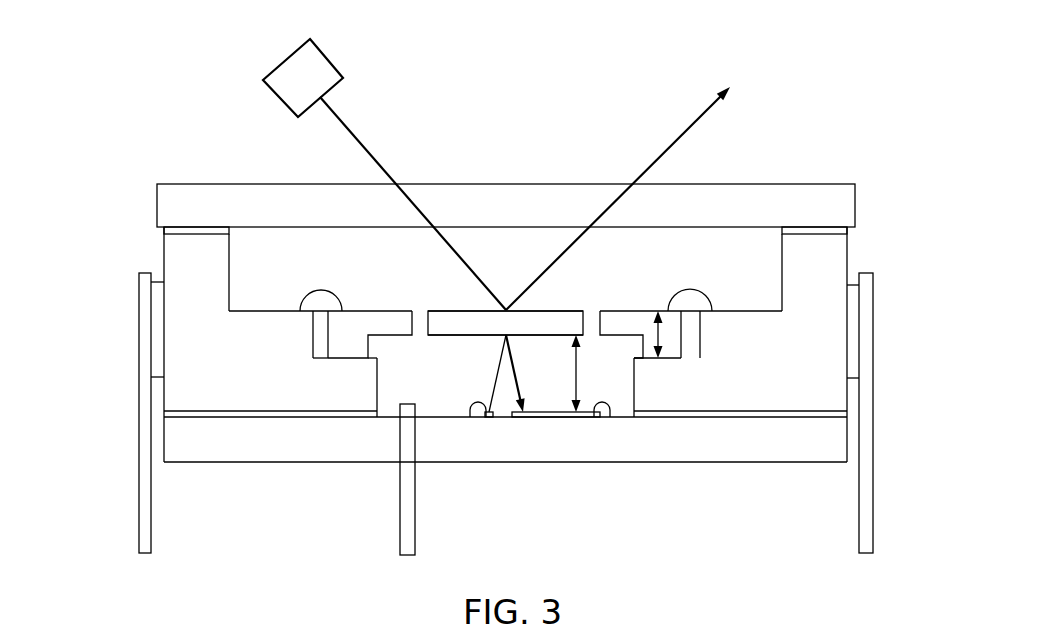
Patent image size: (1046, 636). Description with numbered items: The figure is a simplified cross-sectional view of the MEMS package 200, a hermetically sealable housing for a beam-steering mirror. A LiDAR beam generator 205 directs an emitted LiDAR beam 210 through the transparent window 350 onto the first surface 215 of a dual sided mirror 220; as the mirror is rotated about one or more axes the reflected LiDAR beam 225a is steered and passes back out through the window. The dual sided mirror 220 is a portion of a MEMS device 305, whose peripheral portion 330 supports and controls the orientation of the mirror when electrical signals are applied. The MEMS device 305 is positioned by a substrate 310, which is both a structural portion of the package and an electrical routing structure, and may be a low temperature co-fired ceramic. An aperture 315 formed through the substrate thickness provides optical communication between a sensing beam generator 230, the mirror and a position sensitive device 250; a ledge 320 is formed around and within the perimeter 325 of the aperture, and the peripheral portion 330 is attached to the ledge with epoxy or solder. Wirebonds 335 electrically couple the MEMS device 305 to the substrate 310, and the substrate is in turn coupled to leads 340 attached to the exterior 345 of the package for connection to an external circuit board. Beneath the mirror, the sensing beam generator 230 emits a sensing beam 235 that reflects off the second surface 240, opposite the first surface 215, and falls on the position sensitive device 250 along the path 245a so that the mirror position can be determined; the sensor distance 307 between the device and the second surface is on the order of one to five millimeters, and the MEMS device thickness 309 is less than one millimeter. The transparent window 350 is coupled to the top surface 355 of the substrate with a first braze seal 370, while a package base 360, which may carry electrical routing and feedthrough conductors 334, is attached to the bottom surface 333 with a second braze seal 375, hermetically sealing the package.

The MEMS package 200 is at (149, 109).
The LiDAR beam generator 205 is at (263, 80).
The emitted LiDAR beam 210 is at (340, 118).
The reflected LiDAR beam 225a is at (648, 167).
The transparent window 350 is at (490, 207).
The top surface 355 is at (175, 233).
The first braze seal 370 is at (835, 233).
The substrate 310 is at (815, 268).
The peripheral portion 330 is at (357, 325).
The ledge 320 is at (343, 360).
The perimeter 325 is at (376, 387).
The bottom surface 333 is at (208, 412).
The wirebonds 335 is at (690, 294).
The MEMS device 305 is at (670, 352).
The MEMS device thickness 309 is at (670, 332).
The aperture 315 is at (634, 368).
The second braze seal 375 is at (842, 412).
The dual sided mirror 220 is at (583, 322).
The first surface 215 is at (545, 310).
The second surface 240 is at (443, 338).
The emitted sensing beam 235 is at (497, 374).
The light path to sensor 245a is at (543, 377).
The sensor distance 307 is at (578, 386).
The position sensitive device 250 is at (562, 418).
The sensing beam generator 230 is at (485, 419).
The package base 360 is at (798, 437).
The feedthrough conductors 334 is at (400, 527).
The leads 340 is at (868, 460).
The exterior 345 is at (860, 362).